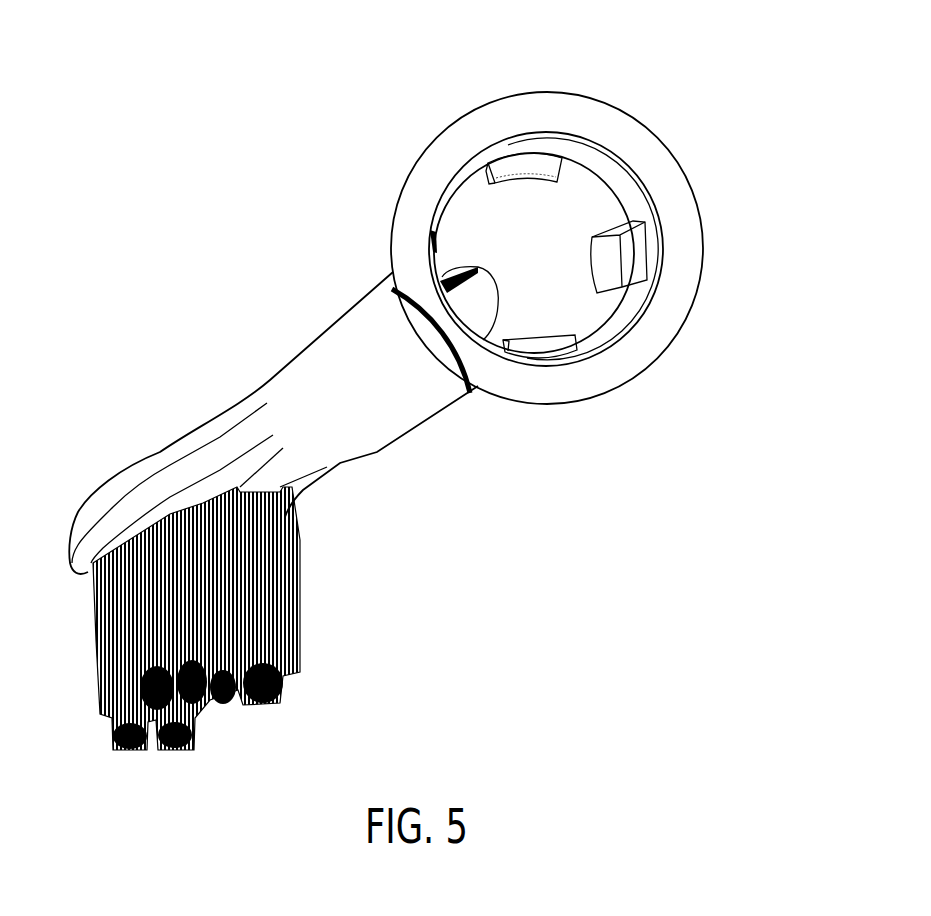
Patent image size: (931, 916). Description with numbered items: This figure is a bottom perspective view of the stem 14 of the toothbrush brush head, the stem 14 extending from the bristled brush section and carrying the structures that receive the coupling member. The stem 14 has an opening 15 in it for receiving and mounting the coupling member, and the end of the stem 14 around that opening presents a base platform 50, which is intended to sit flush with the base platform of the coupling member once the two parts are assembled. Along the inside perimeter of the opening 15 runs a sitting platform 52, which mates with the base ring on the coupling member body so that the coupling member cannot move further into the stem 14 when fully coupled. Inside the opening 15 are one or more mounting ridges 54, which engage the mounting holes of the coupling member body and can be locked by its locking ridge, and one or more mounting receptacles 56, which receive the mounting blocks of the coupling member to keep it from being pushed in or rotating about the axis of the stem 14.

The stem 14 is at (418, 377).
The opening 15 is at (537, 307).
The base platform 50 is at (665, 337).
The sitting platform 52 is at (628, 197).
The mounting ridge 54 is at (540, 161).
The mounting receptacle 56 is at (644, 253).